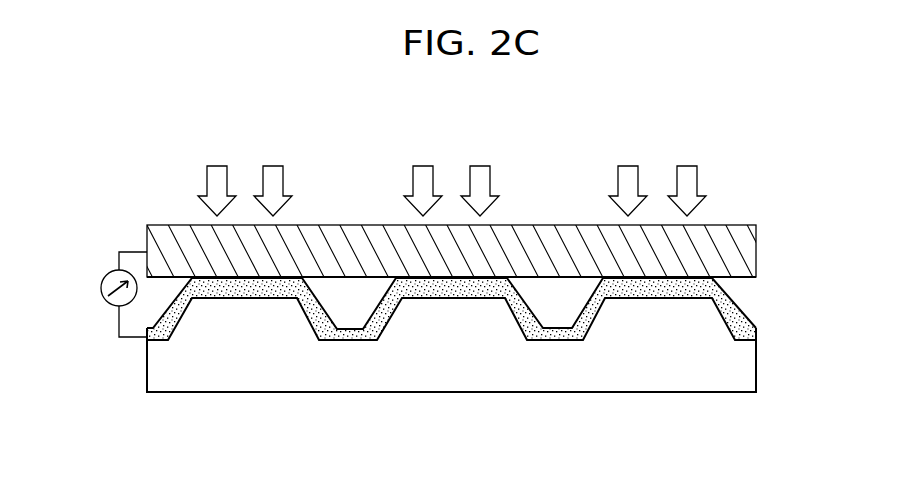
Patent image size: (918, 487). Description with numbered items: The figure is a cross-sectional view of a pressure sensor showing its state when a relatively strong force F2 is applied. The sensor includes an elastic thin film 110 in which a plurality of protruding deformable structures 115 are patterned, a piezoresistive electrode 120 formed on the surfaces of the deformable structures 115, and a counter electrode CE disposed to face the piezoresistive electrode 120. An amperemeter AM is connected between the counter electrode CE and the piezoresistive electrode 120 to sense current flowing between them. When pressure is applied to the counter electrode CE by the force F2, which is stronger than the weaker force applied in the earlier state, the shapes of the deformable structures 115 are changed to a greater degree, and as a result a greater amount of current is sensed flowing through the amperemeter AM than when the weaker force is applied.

The force F2 is at (452, 167).
The counter electrode CE is at (756, 252).
The piezoresistive electrode 120 is at (756, 335).
The deformable structures 115 is at (658, 318).
The elastic thin film 110 is at (750, 369).
The amperemeter AM is at (103, 283).